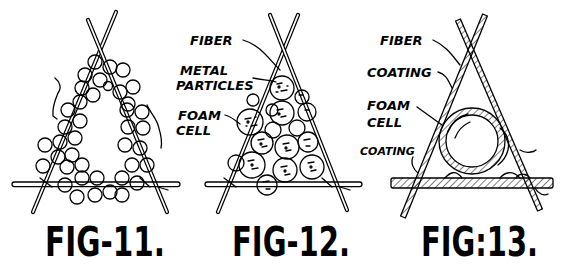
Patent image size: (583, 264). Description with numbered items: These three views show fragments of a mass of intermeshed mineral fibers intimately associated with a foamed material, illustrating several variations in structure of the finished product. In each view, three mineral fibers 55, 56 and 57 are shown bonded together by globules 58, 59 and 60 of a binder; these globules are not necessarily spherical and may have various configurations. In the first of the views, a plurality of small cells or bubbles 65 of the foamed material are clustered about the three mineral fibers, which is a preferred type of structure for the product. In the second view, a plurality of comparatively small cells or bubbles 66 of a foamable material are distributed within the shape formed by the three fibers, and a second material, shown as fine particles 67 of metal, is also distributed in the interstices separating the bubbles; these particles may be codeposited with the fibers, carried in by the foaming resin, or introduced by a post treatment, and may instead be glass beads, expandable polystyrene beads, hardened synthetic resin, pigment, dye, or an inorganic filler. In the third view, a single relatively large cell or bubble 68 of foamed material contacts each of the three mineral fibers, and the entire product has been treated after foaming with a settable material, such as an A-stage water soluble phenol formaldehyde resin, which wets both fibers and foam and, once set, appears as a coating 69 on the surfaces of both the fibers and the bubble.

In FIG. 11, the mineral fiber 55 is at (142, 105).
In FIG. 12, the mineral fiber 55 is at (320, 137).
In FIG. 13, the mineral fiber 55 is at (501, 100).
In FIG. 11, the mineral fiber 56 is at (146, 193).
In FIG. 12, the mineral fiber 56 is at (290, 190).
In FIG. 13, the mineral fiber 56 is at (473, 187).
In FIG. 11, the mineral fiber 57 is at (47, 178).
In FIG. 12, the mineral fiber 57 is at (242, 142).
In FIG. 11, the globule of binder 58 is at (165, 194).
In FIG. 12, the globule of binder 58 is at (343, 182).
In FIG. 13, the globule of binder 58 is at (540, 197).
In FIG. 11, the globule of binder 59 is at (42, 197).
In FIG. 12, the globule of binder 59 is at (233, 187).
In FIG. 13, the globule of binder 59 is at (400, 197).
In FIG. 11, the globule of binder 60 is at (110, 48).
In FIG. 12, the globule of binder 60 is at (292, 50).
In FIG. 13, the globule of binder 60 is at (483, 47).
In FIG. 11, the small cells or bubbles 65 is at (55, 78).
In FIG. 12, the small cells or bubbles of foamable material 66 is at (312, 84).
In FIG. 12, the fine particles of metal 67 is at (322, 108).
In FIG. 13, the single relatively large cell or bubble 68 is at (516, 132).
In FIG. 13, the coating 69 is at (530, 157).